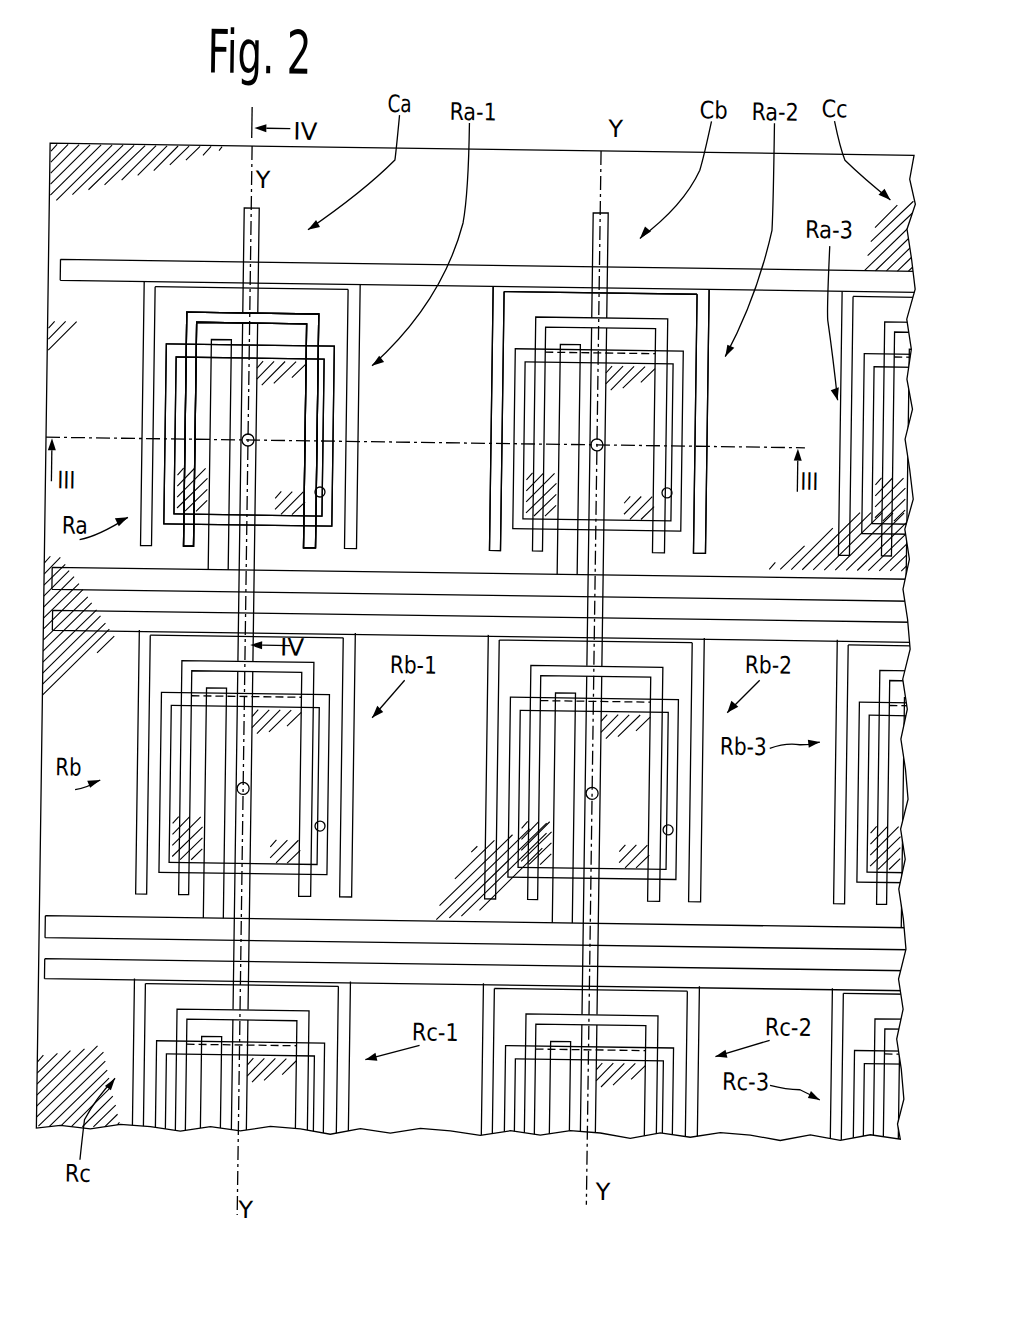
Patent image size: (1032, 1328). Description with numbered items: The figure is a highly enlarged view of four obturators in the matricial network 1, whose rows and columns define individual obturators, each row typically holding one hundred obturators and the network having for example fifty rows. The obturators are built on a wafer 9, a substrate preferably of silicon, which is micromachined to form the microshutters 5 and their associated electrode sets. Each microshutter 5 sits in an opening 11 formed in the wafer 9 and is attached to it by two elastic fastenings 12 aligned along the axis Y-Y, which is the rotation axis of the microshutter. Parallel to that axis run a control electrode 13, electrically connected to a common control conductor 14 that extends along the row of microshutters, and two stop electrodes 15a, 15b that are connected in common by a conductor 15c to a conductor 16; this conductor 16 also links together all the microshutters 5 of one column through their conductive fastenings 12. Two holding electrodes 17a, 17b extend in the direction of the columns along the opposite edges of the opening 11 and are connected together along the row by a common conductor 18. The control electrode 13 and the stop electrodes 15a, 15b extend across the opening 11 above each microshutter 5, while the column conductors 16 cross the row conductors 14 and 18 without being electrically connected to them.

The network 1 is at (478, 571).
The microshutter 5 is at (455, 571).
The wafer 9 is at (613, 375).
The opening 11 is at (466, 601).
The elastic fastenings 12 is at (413, 474).
The control electrode 13 is at (322, 541).
The common control conductor 14 is at (479, 740).
The stop electrode 15a is at (140, 791).
The stop electrode 15b is at (306, 779).
The conductor 15c is at (251, 617).
The conductor 16 is at (407, 209).
The holding electrode 17a is at (215, 370).
The holding electrode 17b is at (376, 375).
The common conductor 18 is at (481, 583).